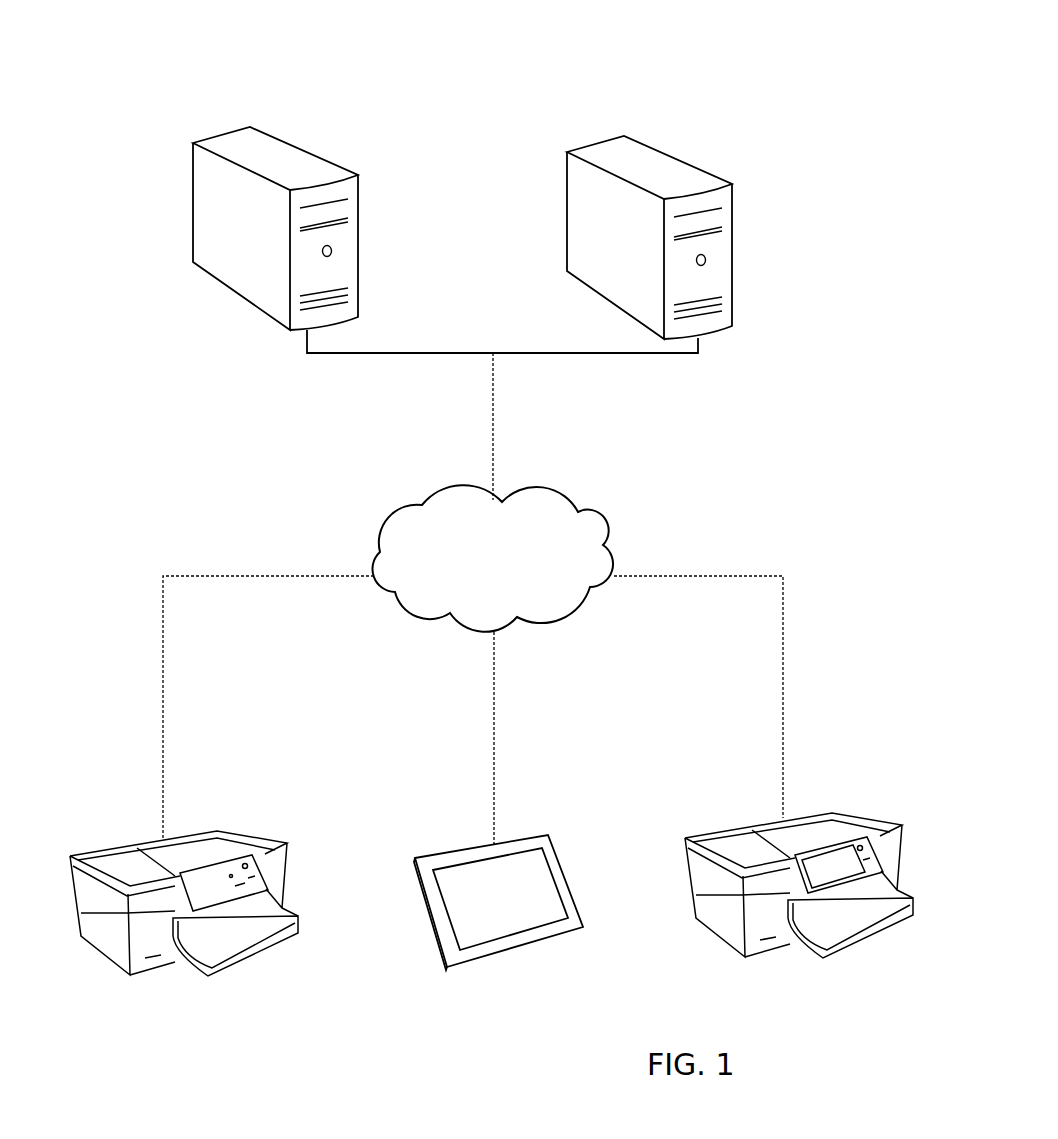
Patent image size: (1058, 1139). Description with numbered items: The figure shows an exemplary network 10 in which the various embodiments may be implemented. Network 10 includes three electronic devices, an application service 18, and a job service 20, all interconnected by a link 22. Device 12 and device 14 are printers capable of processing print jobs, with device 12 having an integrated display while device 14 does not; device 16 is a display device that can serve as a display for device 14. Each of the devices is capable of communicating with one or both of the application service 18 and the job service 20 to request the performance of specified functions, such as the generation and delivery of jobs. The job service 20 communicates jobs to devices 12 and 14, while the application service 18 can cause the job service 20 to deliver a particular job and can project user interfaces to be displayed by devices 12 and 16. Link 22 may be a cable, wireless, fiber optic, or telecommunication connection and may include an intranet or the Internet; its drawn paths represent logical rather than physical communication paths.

The network 10 is at (493, 72).
The device 12 is at (887, 839).
The device 14 is at (273, 858).
The device 16 is at (560, 852).
The application service 18 is at (287, 150).
The job service 20 is at (670, 163).
The link 22 is at (512, 493).